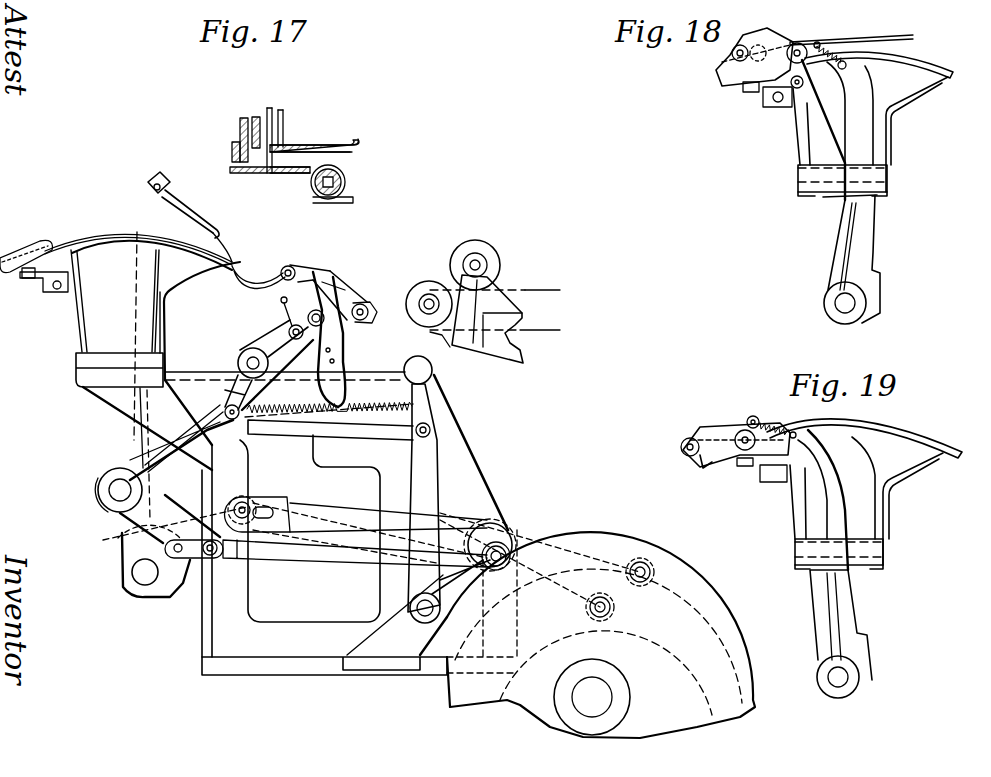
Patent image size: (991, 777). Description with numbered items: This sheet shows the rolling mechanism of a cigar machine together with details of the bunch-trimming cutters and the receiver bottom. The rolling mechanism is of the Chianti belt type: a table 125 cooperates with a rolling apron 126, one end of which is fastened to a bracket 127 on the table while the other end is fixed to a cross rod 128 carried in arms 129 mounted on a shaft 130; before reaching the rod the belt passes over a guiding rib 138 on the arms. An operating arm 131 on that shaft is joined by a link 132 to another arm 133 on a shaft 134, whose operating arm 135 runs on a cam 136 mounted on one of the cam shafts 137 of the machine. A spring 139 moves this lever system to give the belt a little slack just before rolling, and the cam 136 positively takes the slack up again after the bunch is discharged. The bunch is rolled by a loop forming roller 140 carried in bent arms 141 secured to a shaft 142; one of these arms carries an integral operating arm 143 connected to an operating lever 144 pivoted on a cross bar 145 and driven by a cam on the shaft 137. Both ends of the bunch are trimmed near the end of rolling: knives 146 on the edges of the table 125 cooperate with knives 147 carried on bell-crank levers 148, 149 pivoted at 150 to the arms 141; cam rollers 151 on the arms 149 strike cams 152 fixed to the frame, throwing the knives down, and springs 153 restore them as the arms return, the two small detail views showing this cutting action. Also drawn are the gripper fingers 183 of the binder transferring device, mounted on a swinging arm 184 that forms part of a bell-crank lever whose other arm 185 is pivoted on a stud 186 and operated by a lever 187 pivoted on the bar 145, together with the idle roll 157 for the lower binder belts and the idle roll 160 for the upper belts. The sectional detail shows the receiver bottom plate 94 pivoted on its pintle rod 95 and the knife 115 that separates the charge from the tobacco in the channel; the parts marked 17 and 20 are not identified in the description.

In FIG. 17, the knife 115 is at (267, 118).
In FIG. 17, the strip 17 is at (352, 150).
In FIG. 17, the roller 20 is at (346, 185).
In FIG. 17, the pintle rod 95 is at (238, 172).
In FIG. 17, the plate 94 is at (259, 174).
In FIG. 17, the gripper fingers 183 is at (164, 186).
In FIG. 17, the rolling apron 126 is at (112, 243).
In FIG. 17, the table 125 is at (112, 247).
In FIG. 17, the knives 146 is at (14, 256).
In FIG. 17, the bracket 127 is at (27, 278).
In FIG. 17, the cams 152 is at (57, 292).
In FIG. 18, the cams 152 is at (785, 103).
In FIG. 19, the cams 152 is at (821, 557).
In FIG. 17, the swinging arm 184 is at (150, 437).
In FIG. 17, the loop forming roller 140 is at (295, 259).
In FIG. 17, the knives 147 is at (310, 276).
In FIG. 17, the guiding rib 138 is at (348, 280).
In FIG. 17, the pivot 150 is at (337, 283).
In FIG. 17, the cross rod 128 is at (372, 309).
In FIG. 17, the cam rollers 151 is at (300, 337).
In FIG. 17, the bell-crank lever 148 is at (310, 314).
In FIG. 17, the bell-crank arm 149 is at (290, 330).
In FIG. 17, the springs 153 is at (344, 340).
In FIG. 17, the arms 129 is at (262, 350).
In FIG. 17, the shaft 130 is at (238, 361).
In FIG. 17, the operating arm 131 is at (225, 407).
In FIG. 17, the arm 133 is at (433, 500).
In FIG. 17, the spring 139 is at (378, 401).
In FIG. 17, the link 132 is at (366, 432).
In FIG. 17, the bent arms 141 is at (226, 452).
In FIG. 17, the shaft 142 is at (112, 482).
In FIG. 17, the operating arm 143 is at (112, 541).
In FIG. 17, the stud 186 is at (138, 578).
In FIG. 17, the arm 185 is at (205, 560).
In FIG. 17, the operating lever 144 is at (355, 548).
In FIG. 17, the lever 187 is at (356, 527).
In FIG. 17, the shaft 134 is at (410, 606).
In FIG. 17, the operating arm 135 is at (470, 568).
In FIG. 17, the cross bar 145 is at (498, 540).
In FIG. 17, the cam 136 is at (610, 546).
In FIG. 17, the cam shaft 137 is at (592, 697).
In FIG. 17, the idle roll 160 is at (480, 253).
In FIG. 17, the idle roll 157 is at (428, 290).